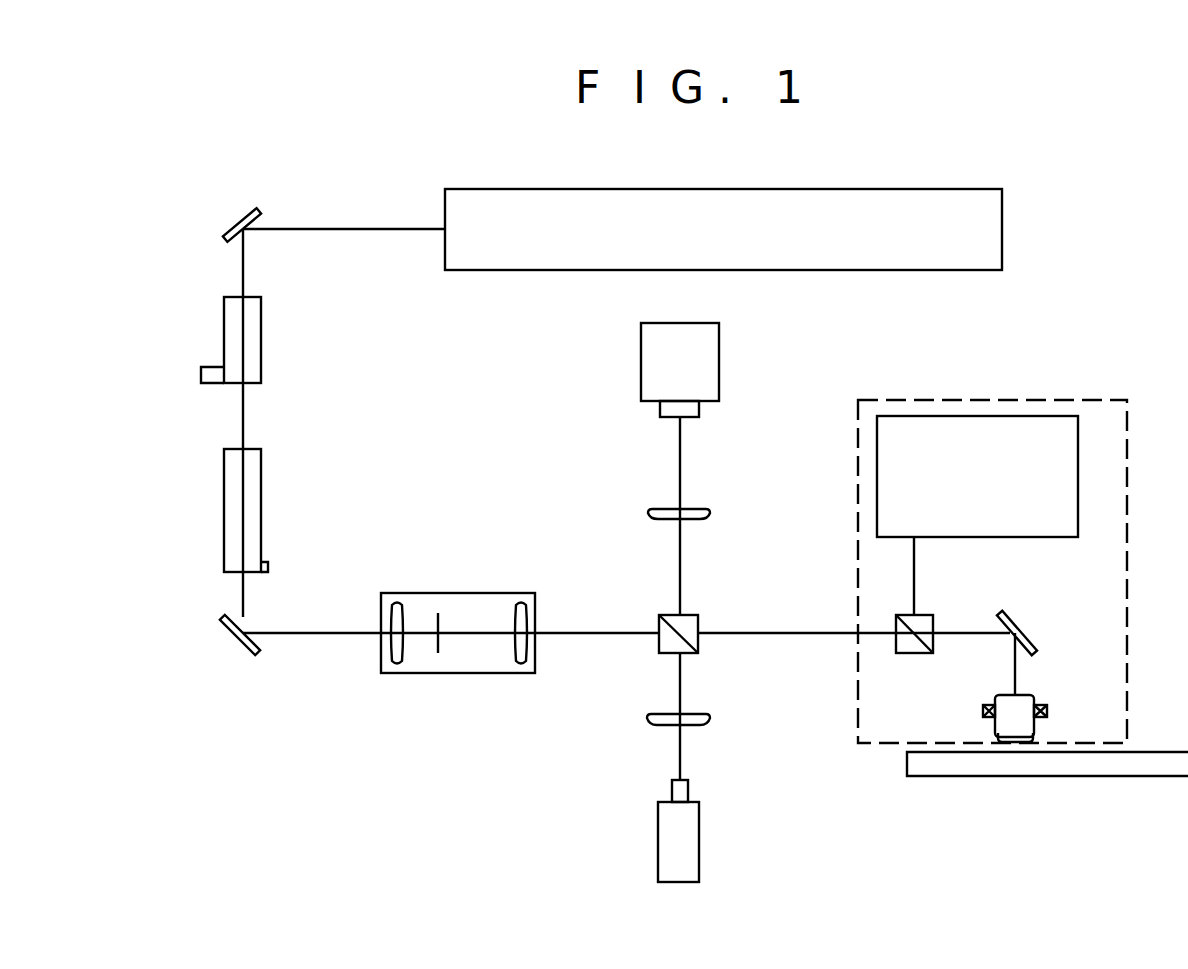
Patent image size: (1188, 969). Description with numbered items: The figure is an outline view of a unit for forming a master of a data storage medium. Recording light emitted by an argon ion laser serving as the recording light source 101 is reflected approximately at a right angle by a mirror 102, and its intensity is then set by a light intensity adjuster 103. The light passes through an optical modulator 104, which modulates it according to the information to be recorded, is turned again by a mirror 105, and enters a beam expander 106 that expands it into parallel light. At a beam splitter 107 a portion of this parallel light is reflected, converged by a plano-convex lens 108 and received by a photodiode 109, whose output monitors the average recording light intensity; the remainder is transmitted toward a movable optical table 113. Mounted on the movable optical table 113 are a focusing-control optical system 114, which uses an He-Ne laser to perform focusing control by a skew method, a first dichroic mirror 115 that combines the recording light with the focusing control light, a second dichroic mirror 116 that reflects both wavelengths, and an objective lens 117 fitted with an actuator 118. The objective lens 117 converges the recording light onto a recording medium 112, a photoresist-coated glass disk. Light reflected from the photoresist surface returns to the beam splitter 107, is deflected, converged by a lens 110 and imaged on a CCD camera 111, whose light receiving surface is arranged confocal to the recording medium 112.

The recording light source 101 is at (817, 189).
The mirror 102 is at (237, 222).
The light intensity adjuster 103 is at (262, 339).
The optical modulator 104 is at (262, 500).
The mirror 105 is at (235, 642).
The beam expander 106 is at (458, 675).
The beam splitter 107 is at (668, 657).
The plano-convex lens 108 is at (657, 723).
The photodiode 109 is at (658, 837).
The lens 110 is at (698, 520).
The CCD camera 111 is at (720, 360).
The recording medium 112 is at (963, 777).
The movable optical table 113 is at (1027, 400).
The focusing-control optical system 114 is at (877, 472).
The first dichroic mirror 115 is at (935, 622).
The second dichroic mirror 116 is at (1032, 632).
The objective lens 117 is at (1035, 732).
The actuator 118 is at (1038, 697).